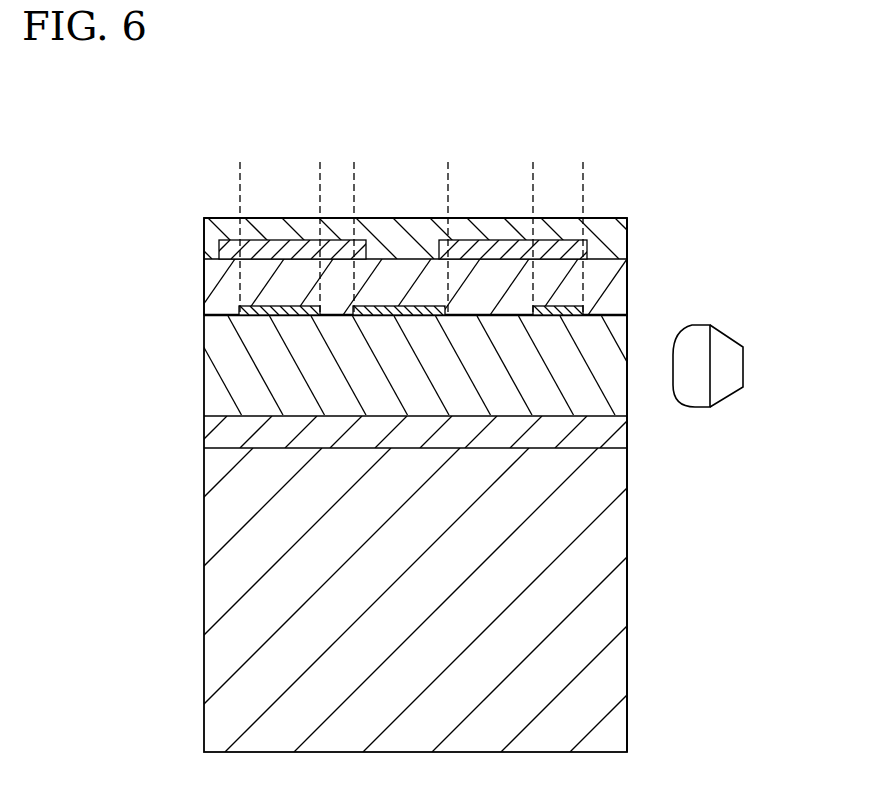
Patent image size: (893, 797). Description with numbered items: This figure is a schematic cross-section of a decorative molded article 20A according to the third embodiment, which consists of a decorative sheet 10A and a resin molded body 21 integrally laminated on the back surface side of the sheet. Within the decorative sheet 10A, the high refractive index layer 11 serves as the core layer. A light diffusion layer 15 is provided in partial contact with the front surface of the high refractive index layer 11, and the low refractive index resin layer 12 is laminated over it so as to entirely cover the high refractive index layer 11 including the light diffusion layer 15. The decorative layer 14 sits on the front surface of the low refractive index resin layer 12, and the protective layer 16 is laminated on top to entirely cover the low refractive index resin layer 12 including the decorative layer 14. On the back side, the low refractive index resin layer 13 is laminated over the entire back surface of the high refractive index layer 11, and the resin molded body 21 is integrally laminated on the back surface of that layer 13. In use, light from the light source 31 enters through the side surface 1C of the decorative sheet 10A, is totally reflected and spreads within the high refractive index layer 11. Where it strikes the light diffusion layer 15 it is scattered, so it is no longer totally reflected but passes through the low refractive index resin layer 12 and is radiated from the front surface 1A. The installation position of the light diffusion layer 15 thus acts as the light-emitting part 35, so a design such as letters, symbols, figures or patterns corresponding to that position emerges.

The decorative molded article 20A is at (447, 126).
The decorative sheet 10A is at (188, 292).
The protective layer 16 is at (623, 236).
The decorative layer 14 is at (488, 243).
The low refractive index resin layer 12 is at (612, 290).
The light diffusion layer 15 is at (262, 312).
The high refractive index layer 11 is at (618, 343).
The low refractive index resin layer 13 is at (620, 440).
The resin molded body 21 is at (608, 602).
The front surface 1A is at (600, 217).
The side surface 1C is at (628, 397).
The light source 31 is at (731, 349).
The light-emitting part 35 is at (320, 183).